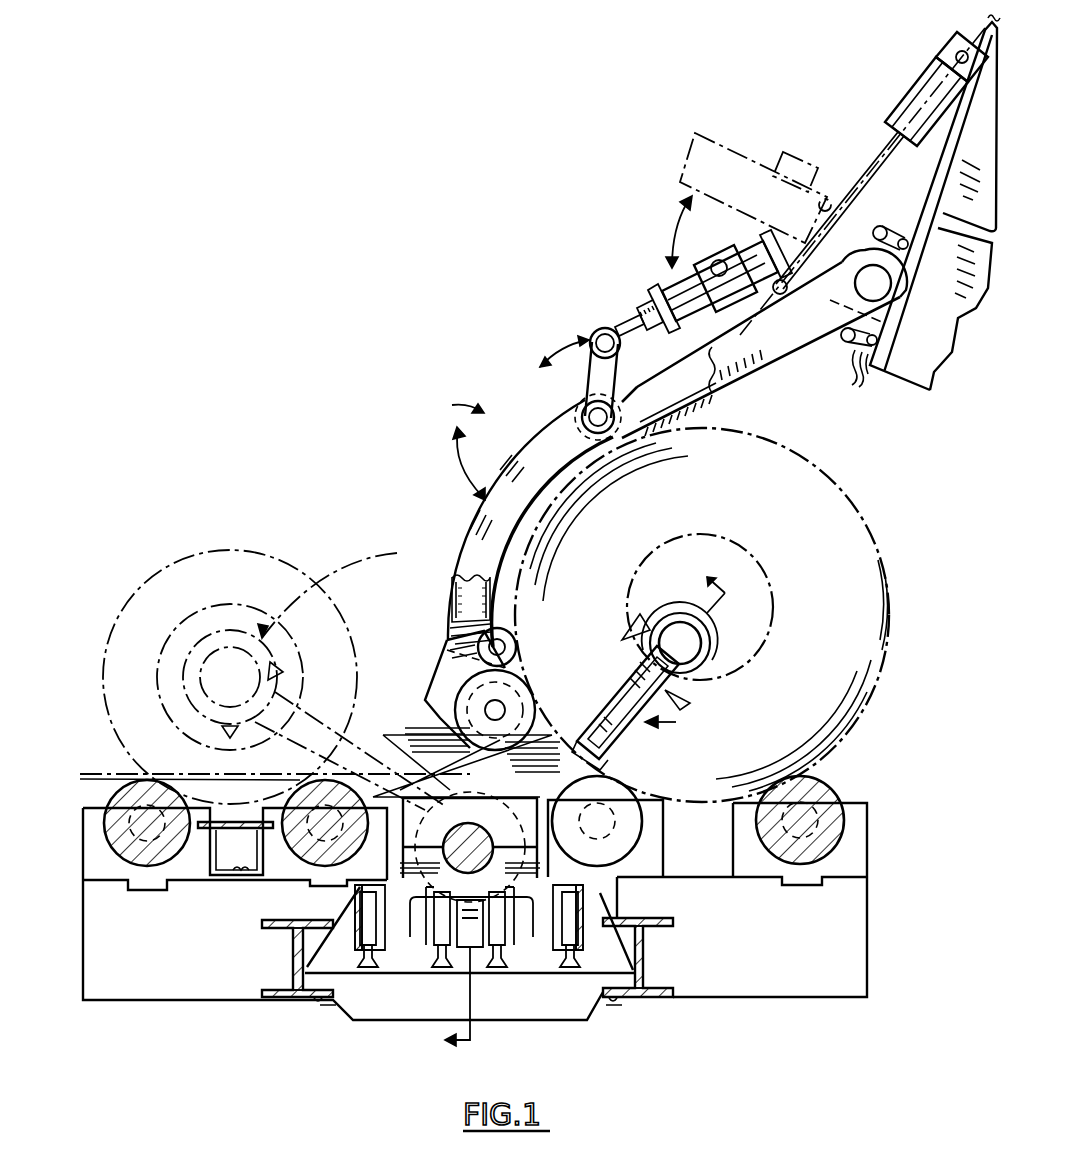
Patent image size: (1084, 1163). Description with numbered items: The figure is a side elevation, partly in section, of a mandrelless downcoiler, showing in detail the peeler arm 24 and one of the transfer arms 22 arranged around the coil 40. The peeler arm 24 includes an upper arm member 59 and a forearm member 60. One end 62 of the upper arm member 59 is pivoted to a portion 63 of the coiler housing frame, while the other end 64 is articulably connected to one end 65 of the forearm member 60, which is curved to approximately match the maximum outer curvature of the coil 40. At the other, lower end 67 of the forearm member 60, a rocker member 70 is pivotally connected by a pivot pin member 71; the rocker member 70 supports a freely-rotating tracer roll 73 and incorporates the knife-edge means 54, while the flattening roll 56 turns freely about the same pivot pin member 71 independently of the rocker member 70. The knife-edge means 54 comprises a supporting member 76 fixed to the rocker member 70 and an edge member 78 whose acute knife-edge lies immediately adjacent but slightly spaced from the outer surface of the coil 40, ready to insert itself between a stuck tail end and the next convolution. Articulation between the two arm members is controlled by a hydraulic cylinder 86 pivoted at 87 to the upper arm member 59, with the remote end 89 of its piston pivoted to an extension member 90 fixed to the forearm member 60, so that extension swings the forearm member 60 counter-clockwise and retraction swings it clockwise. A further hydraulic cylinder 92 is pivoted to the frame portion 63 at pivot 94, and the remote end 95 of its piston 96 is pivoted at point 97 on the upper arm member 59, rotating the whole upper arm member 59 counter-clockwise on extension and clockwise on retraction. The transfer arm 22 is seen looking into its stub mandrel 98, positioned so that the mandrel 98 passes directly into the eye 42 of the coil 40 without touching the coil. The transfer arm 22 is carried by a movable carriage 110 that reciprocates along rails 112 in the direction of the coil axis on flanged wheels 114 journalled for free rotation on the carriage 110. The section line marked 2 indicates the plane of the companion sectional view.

The section line 2- 2 is at (572, 799).
The transfer arms 22 is at (672, 728).
The peeler arm 24 is at (452, 440).
The coil 40 is at (812, 468).
The eye 42 is at (775, 600).
The knife-edge means 54 is at (535, 735).
The flattening roll 56 is at (514, 661).
The upper arm member 59 is at (730, 374).
The forearm member 60 is at (472, 548).
The end of upper arm member 62 is at (950, 305).
The portion of the frame 63 is at (868, 243).
The other end of upper arm member 64 is at (685, 437).
The end of forearm member 65 is at (563, 428).
The other end of forearm member 67 is at (445, 655).
The rocker member 70 is at (455, 682).
The pivot pin member 71 is at (506, 708).
The tracer roll 73 is at (507, 633).
The supporting member 76 is at (600, 716).
The edge member 78 is at (600, 762).
The hydraulic cylinder 86 is at (750, 250).
The pivot 87 is at (728, 270).
The remote end of piston 89 is at (628, 326).
The extension member 90 is at (583, 362).
The hydraulic cylinder 92 is at (920, 100).
The pivot 94 is at (962, 50).
The remote end of piston 95 is at (795, 345).
The piston 96 is at (882, 162).
The pivot point 97 is at (762, 332).
The stub mandrel 98 is at (670, 632).
The carriage 110 is at (393, 935).
The rails 112 is at (368, 975).
The flanged wheels 114 is at (596, 920).